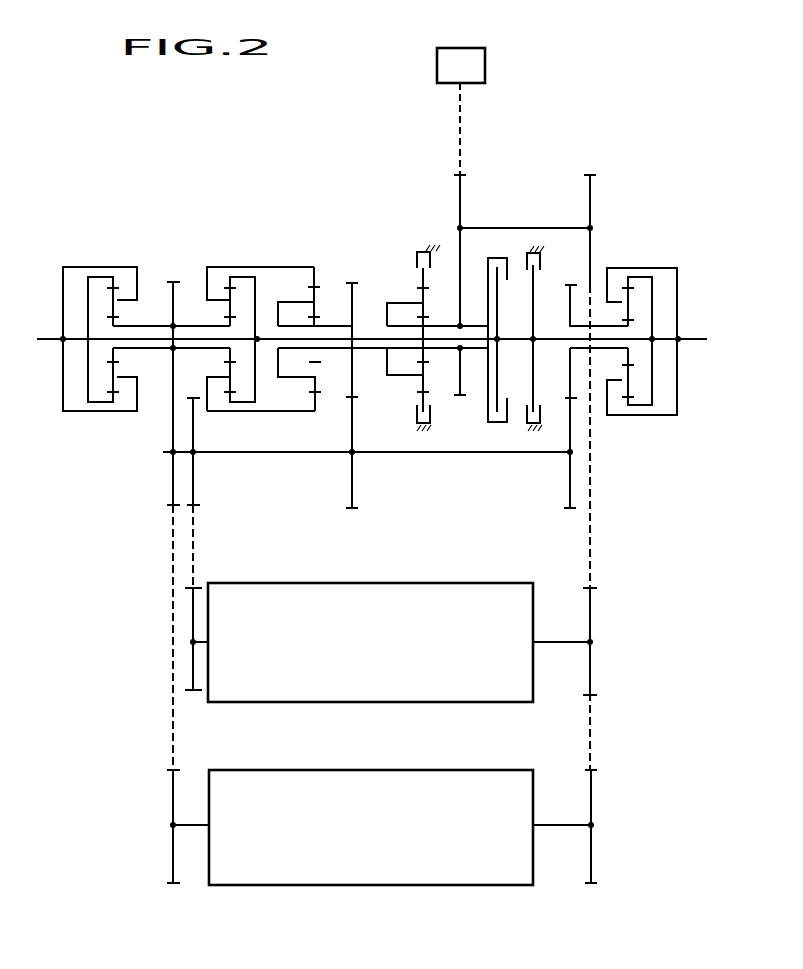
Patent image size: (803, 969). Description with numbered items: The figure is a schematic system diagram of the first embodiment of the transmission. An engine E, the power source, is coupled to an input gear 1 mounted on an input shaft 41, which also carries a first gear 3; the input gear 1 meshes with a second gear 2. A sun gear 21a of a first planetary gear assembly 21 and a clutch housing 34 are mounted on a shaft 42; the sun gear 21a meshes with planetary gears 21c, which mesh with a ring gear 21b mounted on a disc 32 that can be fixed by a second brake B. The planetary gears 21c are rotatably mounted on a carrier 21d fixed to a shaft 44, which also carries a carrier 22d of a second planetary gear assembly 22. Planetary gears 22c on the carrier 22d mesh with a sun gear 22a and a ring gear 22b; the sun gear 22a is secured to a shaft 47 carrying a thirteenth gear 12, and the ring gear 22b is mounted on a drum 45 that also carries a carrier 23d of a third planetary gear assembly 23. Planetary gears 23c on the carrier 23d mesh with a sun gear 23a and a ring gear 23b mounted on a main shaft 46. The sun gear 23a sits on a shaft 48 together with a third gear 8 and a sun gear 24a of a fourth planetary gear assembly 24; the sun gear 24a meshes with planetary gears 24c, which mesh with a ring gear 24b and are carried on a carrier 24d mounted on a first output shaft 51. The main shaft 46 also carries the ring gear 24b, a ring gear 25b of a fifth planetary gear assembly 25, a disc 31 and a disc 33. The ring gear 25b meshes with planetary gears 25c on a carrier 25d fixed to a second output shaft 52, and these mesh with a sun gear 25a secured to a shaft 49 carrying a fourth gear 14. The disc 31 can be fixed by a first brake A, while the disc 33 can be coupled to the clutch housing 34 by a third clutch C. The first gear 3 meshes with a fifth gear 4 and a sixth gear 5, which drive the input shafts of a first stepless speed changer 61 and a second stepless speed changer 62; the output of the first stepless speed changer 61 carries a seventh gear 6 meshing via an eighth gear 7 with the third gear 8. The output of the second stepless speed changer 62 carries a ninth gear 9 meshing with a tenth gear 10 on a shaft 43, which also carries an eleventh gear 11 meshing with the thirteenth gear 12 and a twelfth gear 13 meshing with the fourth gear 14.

The engine E is at (486, 67).
The input gear 1 is at (463, 185).
The second gear 2 is at (457, 306).
The first gear 3 is at (585, 185).
The fifth gear 4 is at (595, 805).
The sixth gear 5 is at (593, 623).
The seventh gear 6 is at (171, 800).
The eighth gear 7 is at (163, 492).
The third gear 8 is at (178, 368).
The ninth gear 9 is at (190, 620).
The tenth gear 10 is at (196, 492).
The 11th gear 11 is at (355, 492).
The 13th gear 12 is at (348, 396).
The 12th gear 13 is at (563, 488).
The fourth gear 14 is at (570, 374).
The first planetary gear assembly 21 is at (443, 207).
The sun gear 21a is at (422, 317).
The ring gear 21b is at (421, 288).
The planetary gears 21c is at (427, 362).
The carrier 21d is at (394, 378).
The second planetary gear assembly 22 is at (347, 209).
The sun gear 22a is at (320, 318).
The ring gear 22b is at (310, 267).
The planetary gears 22c is at (320, 290).
The carrier 22d is at (302, 378).
The third planetary gear assembly 23 is at (260, 205).
The sun gear 23a is at (228, 325).
The ring gear 23b is at (229, 287).
The planetary gears 23c is at (240, 277).
The carrier 23d is at (212, 287).
The fourth planetary gear assembly 24 is at (145, 205).
The sun gear 24a is at (118, 325).
The ring gear 24b is at (113, 290).
The planetary gears 24c is at (110, 288).
The carrier 24d is at (138, 282).
The fifth planetary gear assembly 25 is at (680, 207).
The sun gear 25a is at (627, 323).
The ring gear 25b is at (628, 285).
The planetary gears 25c is at (650, 277).
The carrier 25d is at (610, 410).
The disc 31 is at (534, 313).
The disc 32 is at (430, 408).
The disc 33 is at (498, 316).
The clutch housing 34 is at (487, 283).
The input shaft 41 is at (517, 227).
The shaft 42 is at (470, 352).
The shaft 43 is at (253, 453).
The shaft 44 is at (365, 350).
The drum 45 is at (260, 412).
The main shaft 46 is at (515, 358).
The shaft 47 is at (325, 376).
The shaft 48 is at (131, 348).
The shaft 49 is at (620, 350).
The first output shaft 51 is at (46, 340).
The second output shaft 52 is at (693, 342).
The first stepless speed changer 61 is at (333, 887).
The second stepless speed changer 62 is at (328, 703).
The first brake A is at (542, 257).
The second brake B is at (418, 254).
The third clutch C is at (487, 256).